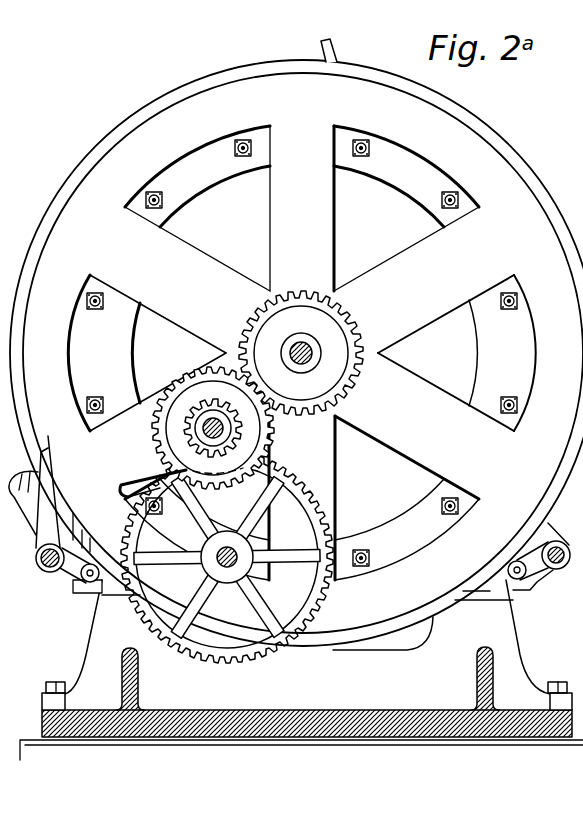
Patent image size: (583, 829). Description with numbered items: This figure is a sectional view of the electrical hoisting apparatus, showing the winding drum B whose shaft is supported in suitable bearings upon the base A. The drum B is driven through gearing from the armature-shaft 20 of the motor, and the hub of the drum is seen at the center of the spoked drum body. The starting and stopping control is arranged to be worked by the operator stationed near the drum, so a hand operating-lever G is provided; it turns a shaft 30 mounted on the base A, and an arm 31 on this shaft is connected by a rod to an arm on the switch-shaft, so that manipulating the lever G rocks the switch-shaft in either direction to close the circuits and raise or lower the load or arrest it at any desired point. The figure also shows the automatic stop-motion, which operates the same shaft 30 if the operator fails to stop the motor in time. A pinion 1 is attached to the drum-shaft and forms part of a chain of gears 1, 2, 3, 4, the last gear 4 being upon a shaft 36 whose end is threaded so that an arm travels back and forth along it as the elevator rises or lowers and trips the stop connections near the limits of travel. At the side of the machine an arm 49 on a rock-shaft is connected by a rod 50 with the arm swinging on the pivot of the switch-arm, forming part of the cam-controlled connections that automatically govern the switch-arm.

The drum B is at (296, 353).
The base A is at (301, 670).
The rod 50 is at (338, 53).
The pinion 1 is at (341, 337).
The armature-shaft 20 is at (291, 346).
The gear 2 is at (272, 437).
The gear 3 is at (178, 433).
The gear 4 is at (323, 510).
The shaft 36 is at (235, 564).
The hand operating-lever G is at (46, 532).
The shaft 30 is at (50, 572).
The arm 31 is at (76, 594).
The arm 49 is at (541, 576).